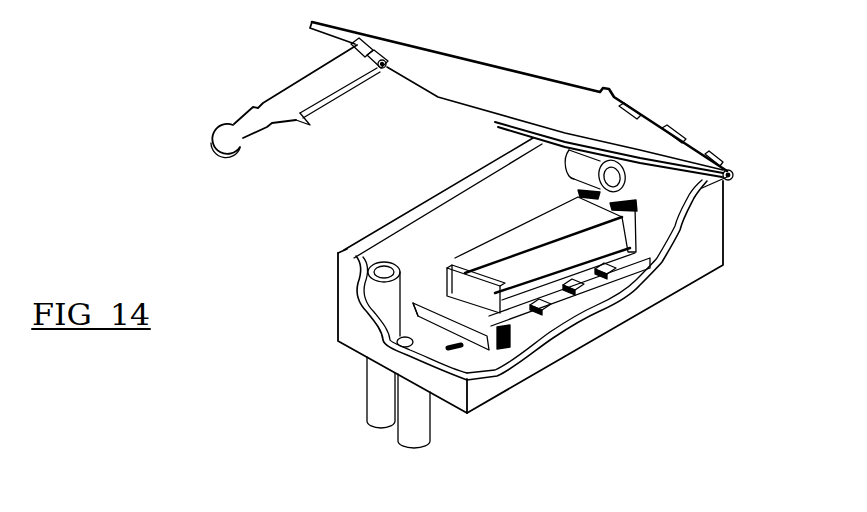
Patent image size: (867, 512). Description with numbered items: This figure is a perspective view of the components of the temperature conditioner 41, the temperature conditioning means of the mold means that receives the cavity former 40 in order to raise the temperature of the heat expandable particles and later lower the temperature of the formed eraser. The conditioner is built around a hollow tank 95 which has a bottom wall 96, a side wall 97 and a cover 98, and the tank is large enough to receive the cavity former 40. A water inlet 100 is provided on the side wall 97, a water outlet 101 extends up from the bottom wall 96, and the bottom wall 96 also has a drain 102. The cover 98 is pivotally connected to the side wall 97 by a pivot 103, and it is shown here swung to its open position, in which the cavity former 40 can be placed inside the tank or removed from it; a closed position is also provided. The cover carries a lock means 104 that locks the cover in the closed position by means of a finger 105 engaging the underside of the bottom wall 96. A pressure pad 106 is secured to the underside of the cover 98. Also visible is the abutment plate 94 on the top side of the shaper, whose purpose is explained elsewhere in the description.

The cavity former 40 is at (455, 242).
The temperature conditioner 41 is at (282, 282).
The abutment plate 94 is at (567, 233).
The hollow tank 95 is at (717, 279).
The bottom wall 96 is at (465, 369).
The side wall 97 is at (712, 234).
The cover 98 is at (490, 79).
The water inlet 100 is at (625, 177).
The water outlet 101 is at (372, 262).
The drain 102 is at (382, 340).
The pivot 103 is at (733, 176).
The lock means 104 is at (317, 87).
The finger 105 is at (310, 127).
The pressure pad 106 is at (515, 132).